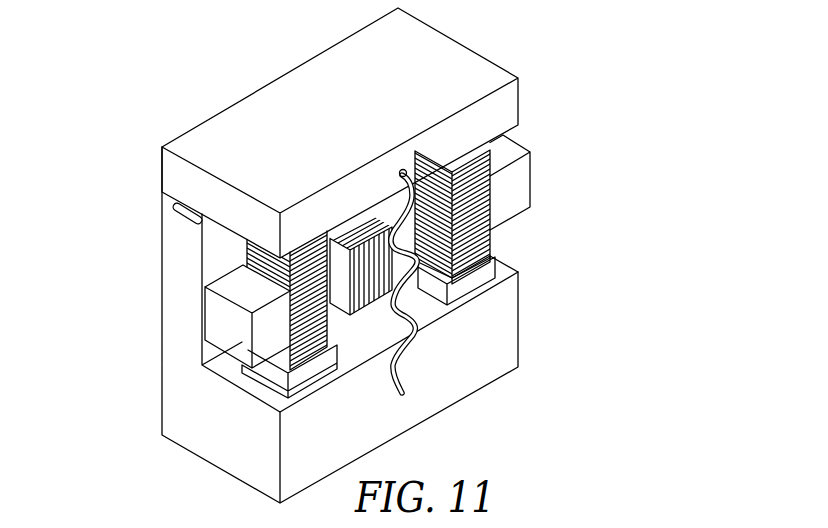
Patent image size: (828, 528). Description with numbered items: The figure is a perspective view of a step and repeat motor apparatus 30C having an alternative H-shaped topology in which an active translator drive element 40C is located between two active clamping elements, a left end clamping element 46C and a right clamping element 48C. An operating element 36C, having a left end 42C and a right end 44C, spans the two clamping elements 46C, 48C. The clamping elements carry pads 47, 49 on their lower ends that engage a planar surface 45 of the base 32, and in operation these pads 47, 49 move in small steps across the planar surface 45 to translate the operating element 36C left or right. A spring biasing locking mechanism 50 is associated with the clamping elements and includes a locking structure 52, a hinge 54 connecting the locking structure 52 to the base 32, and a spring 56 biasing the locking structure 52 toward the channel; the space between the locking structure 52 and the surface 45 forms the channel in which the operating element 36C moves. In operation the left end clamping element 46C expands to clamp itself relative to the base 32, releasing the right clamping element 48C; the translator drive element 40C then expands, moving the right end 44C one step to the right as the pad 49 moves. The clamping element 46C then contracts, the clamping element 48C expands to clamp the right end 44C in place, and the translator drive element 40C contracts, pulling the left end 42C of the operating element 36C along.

The step and repeat motor apparatus 30C is at (557, 96).
The base 32 is at (510, 350).
The spring biasing locking mechanism 50 is at (348, 210).
The locking structure 52 is at (472, 70).
The hinge 54 is at (165, 203).
The spring 56 is at (417, 343).
The operating element 36C is at (352, 267).
The left end of operating element 42C is at (213, 328).
The right end of operating element 44C is at (520, 177).
The translator drive element 40C is at (365, 215).
The left end clamping element 46C is at (243, 257).
The right clamping element 48C is at (480, 245).
The pad 47 is at (277, 382).
The pad 49 is at (485, 273).
The planar surface 45 is at (357, 357).